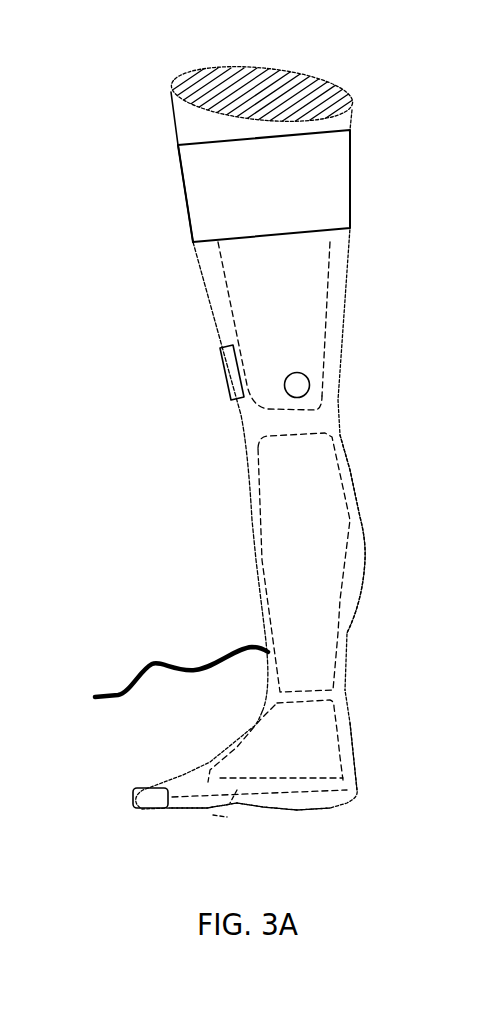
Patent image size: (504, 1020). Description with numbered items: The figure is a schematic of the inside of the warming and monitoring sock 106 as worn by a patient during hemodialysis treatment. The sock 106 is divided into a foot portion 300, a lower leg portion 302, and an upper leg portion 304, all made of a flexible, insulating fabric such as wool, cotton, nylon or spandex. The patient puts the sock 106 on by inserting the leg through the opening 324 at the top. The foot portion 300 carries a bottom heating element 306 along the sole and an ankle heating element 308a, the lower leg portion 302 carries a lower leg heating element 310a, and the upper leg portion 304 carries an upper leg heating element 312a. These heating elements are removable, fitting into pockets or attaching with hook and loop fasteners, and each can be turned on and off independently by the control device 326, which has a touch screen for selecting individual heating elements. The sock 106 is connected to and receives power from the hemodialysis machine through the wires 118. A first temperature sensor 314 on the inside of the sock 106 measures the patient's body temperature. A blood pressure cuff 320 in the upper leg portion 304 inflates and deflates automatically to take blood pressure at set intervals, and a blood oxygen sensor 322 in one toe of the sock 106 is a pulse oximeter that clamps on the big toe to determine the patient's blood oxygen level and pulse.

The sock 106 is at (345, 432).
The wires 118 is at (142, 670).
The foot portion 300 is at (351, 770).
The lower leg portion 302 is at (356, 527).
The upper leg portion 304 is at (338, 250).
The bottom heating element 306 is at (250, 833).
The ankle heating element 308a is at (263, 752).
The lower leg heating element 310a is at (297, 580).
The upper leg heating element 312a is at (265, 312).
The first temperature sensor 314 is at (297, 385).
The blood pressure cuff 320 is at (220, 197).
The blood oxygen sensor 322 is at (150, 796).
The opening 324 is at (208, 85).
The control device 326 is at (232, 375).